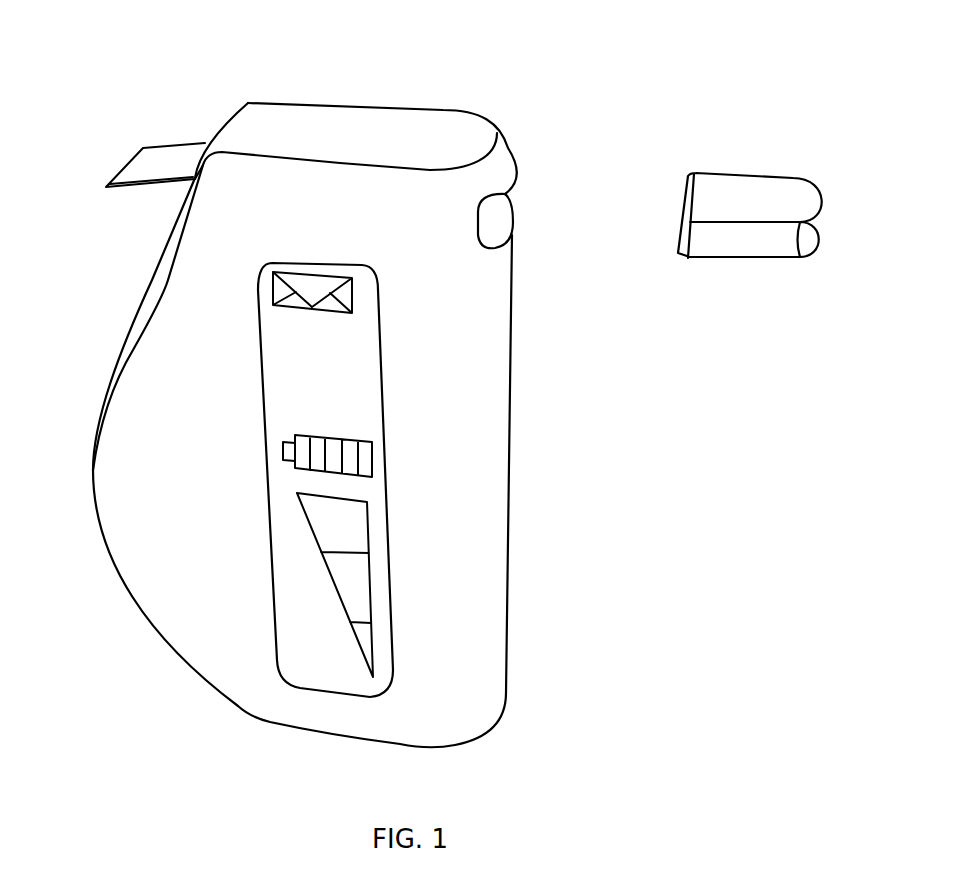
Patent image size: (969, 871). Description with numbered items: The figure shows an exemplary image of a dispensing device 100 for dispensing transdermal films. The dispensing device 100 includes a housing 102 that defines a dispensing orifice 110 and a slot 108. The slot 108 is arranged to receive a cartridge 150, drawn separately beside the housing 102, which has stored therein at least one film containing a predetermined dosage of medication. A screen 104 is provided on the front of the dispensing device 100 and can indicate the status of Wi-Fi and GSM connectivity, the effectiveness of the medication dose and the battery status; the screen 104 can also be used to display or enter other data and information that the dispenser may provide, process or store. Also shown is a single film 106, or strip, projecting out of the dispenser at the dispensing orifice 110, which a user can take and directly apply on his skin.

The dispensing device 100 is at (490, 72).
The housing 102 is at (507, 580).
The screen 104 is at (383, 425).
The film 106 is at (158, 158).
The slot 108 is at (482, 242).
The dispensing orifice 110 is at (193, 180).
The cartridge 150 is at (770, 175).